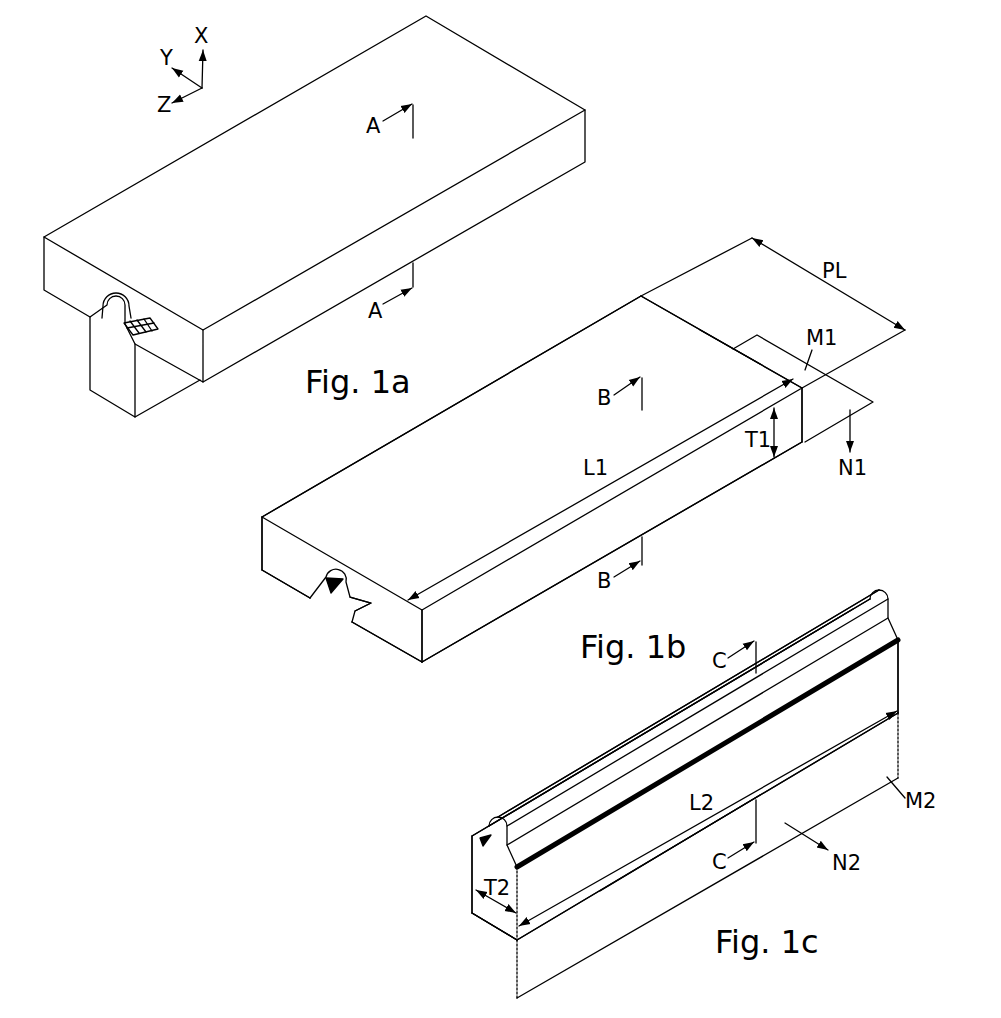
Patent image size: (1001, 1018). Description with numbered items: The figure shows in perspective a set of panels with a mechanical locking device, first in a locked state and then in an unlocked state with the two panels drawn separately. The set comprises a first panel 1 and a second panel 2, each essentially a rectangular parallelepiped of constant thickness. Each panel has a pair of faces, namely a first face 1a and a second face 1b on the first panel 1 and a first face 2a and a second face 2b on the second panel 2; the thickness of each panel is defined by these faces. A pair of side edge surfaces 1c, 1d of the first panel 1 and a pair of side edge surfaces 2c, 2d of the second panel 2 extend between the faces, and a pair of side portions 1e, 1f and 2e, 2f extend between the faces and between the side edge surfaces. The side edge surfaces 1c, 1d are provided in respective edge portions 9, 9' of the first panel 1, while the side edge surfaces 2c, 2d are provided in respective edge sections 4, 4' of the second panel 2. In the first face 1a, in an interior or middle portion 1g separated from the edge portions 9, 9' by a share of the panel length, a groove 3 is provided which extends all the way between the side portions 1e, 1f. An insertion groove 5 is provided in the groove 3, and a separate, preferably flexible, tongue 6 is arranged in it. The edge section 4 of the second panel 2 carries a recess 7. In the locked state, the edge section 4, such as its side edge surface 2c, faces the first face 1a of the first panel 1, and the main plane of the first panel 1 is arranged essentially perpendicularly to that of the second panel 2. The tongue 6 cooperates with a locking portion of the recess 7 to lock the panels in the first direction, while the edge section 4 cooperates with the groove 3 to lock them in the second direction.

In FIG. 1A, the first panel 1 is at (343, 197).
In FIG. 1B, the first panel 1 is at (530, 483).
In FIG. 1B, the first face 1a is at (365, 631).
In FIG. 1B, the second face 1b is at (675, 330).
In FIG. 1B, the side edge surface 1c is at (262, 542).
In FIG. 1B, the side edge surface 1d is at (792, 416).
In FIG. 1B, the side portion 1e is at (404, 635).
In FIG. 1B, the side portion 1f is at (718, 333).
In FIG. 1B, the interior portion 1g is at (309, 629).
In FIG. 1A, the second panel 2 is at (163, 393).
In FIG. 1C, the second panel 2 is at (760, 771).
In FIG. 1C, the first face 2a is at (808, 763).
In FIG. 1C, the second face 2b is at (470, 868).
In FIG. 1C, the side edge surface 2c is at (820, 638).
In FIG. 1C, the side edge surface 2d is at (693, 846).
In FIG. 1C, the side portion 2e is at (471, 910).
In FIG. 1C, the side portion 2f is at (902, 693).
In FIG. 1B, the groove 3 is at (335, 597).
In FIG. 1C, the edge section 4 is at (671, 712).
In FIG. 1C, the edge section 4' is at (492, 946).
In FIG. 1B, the insertion groove 5 is at (360, 596).
In FIG. 1A, the separate tongue 6 is at (147, 318).
In FIG. 1C, the recess 7 is at (573, 827).
In FIG. 1B, the edge portion 9 is at (443, 406).
In FIG. 1B, the edge portion 9' is at (612, 552).